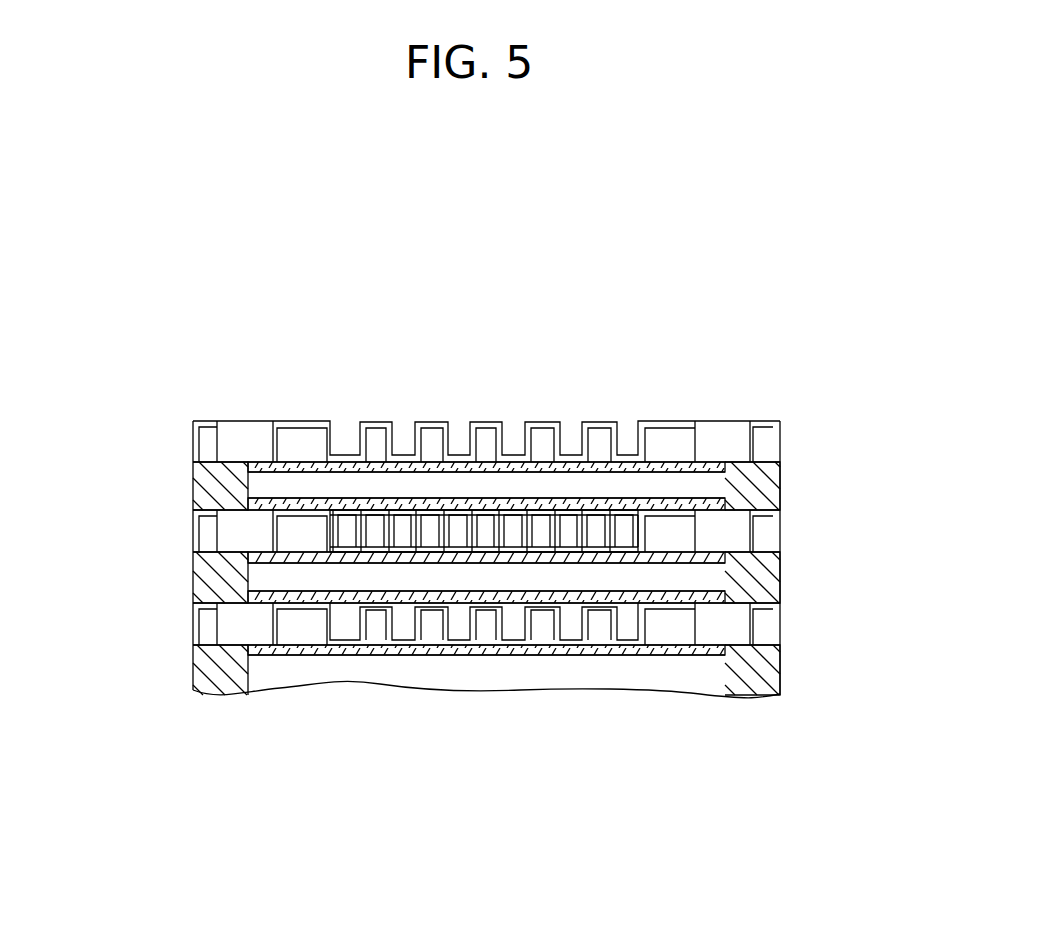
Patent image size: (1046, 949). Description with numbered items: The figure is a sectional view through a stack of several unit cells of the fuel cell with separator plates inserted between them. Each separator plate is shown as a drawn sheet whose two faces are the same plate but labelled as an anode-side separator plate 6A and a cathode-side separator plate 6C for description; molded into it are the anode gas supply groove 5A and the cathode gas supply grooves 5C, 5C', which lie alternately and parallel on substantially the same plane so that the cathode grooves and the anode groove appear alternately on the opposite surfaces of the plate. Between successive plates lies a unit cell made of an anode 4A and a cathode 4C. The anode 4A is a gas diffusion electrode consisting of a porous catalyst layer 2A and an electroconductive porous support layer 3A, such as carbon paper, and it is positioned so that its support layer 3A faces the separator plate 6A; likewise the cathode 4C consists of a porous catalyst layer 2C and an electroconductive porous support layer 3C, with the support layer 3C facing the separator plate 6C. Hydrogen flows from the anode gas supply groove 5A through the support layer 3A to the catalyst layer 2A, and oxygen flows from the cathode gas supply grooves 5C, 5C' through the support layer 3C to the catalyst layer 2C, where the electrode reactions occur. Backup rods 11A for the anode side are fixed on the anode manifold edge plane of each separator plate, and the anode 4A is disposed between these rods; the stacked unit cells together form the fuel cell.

The cathode gas supply groove 5C is at (486, 497).
The cathode gas supply groove 5C' is at (542, 453).
The anode gas supply groove 5A is at (633, 457).
The separator plate 6A is at (778, 622).
The separator plate 6C is at (563, 540).
The backup rod 11A is at (200, 660).
The anode 4A is at (398, 563).
The electroconductive porous support layer 3A is at (486, 623).
The porous catalyst layer 2A is at (440, 742).
The cathode 4C is at (607, 510).
The porous catalyst layer 2C is at (518, 663).
The electroconductive porous support layer 3C is at (670, 742).